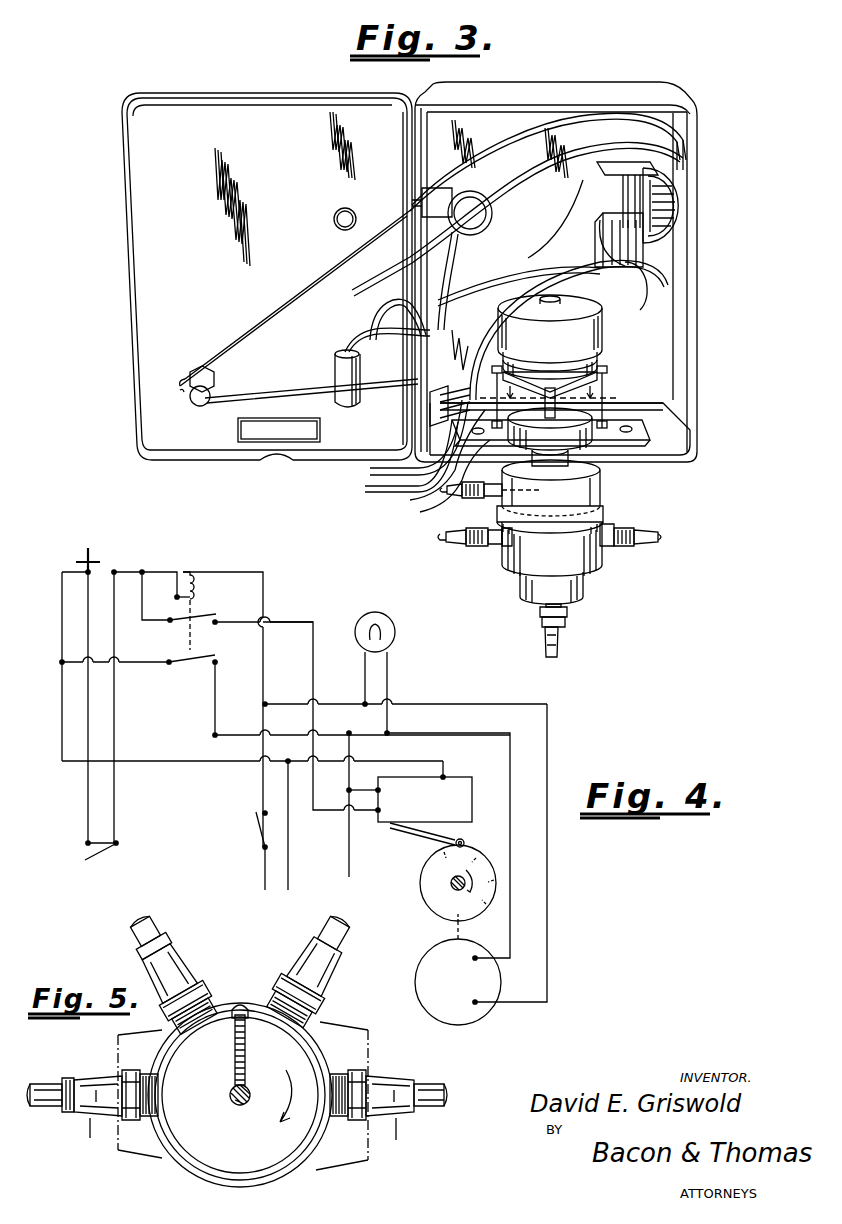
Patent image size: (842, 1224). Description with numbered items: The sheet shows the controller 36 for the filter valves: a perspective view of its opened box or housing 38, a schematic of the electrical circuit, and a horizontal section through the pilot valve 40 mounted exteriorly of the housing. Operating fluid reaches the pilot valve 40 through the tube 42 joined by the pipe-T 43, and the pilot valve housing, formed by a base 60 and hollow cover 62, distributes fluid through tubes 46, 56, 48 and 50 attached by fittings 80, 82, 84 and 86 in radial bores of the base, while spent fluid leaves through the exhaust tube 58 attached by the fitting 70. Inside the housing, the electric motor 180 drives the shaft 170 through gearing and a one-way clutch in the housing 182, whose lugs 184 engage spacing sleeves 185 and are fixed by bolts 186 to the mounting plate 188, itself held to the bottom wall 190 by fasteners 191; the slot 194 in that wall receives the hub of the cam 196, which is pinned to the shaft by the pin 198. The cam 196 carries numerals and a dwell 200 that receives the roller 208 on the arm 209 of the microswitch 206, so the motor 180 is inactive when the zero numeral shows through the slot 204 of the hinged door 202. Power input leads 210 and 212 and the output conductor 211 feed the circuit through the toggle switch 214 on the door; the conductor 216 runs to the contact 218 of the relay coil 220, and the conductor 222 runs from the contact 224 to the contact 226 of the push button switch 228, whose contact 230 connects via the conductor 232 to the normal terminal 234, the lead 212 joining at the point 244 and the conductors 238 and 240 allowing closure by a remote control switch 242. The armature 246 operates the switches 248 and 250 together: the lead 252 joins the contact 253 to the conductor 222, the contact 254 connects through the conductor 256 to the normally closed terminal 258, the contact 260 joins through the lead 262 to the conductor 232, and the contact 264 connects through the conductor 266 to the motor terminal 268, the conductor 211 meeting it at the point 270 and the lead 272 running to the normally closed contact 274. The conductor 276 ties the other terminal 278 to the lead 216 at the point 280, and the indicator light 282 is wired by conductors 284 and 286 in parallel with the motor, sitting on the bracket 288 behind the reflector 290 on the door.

In FIG. 3, the controller 36 is at (588, 72).
In FIG. 3, the box or housing 38 is at (688, 283).
In FIG. 3, the pilot valve 40 is at (566, 553).
In FIG. 5, the pilot valve 40 is at (230, 1040).
In FIG. 3, the tube 42 is at (462, 500).
In FIG. 5, the tube 42 is at (72, 1078).
In FIG. 5, the pipe-T 43 is at (132, 1070).
In FIG. 3, the tube 46 is at (462, 546).
In FIG. 5, the tube 46 is at (50, 1082).
In FIG. 3, the tube 48 is at (606, 518).
In FIG. 3, the tube 50 is at (652, 544).
In FIG. 5, the tube 50 is at (432, 1082).
In FIG. 3, the tube 56 is at (500, 506).
In FIG. 5, the tube 56 is at (186, 960).
In FIG. 3, the exhaust tube 58 is at (558, 650).
In FIG. 5, the exhaust tube 58 is at (301, 953).
In FIG. 3, the base 60 is at (512, 570).
In FIG. 5, the base 60 is at (197, 1170).
In FIG. 3, the cover 62 is at (604, 494).
In FIG. 5, the cover 62 is at (270, 1180).
In FIG. 3, the fitting 70 is at (567, 620).
In FIG. 3, the fitting 80 is at (500, 546).
In FIG. 5, the fitting 80 is at (76, 1112).
In FIG. 5, the fitting 82 is at (190, 990).
In FIG. 5, the fitting 84 is at (284, 990).
In FIG. 3, the fitting 86 is at (620, 548).
In FIG. 5, the fitting 86 is at (354, 1070).
In FIG. 3, the shaft 170 is at (550, 329).
In FIG. 4, the shaft 170 is at (454, 928).
In FIG. 5, the shaft 170 is at (250, 1090).
In FIG. 3, the electric motor 180 is at (583, 337).
In FIG. 4, the electric motor 180 is at (446, 1020).
In FIG. 3, the housing 182 is at (550, 350).
In FIG. 3, the lugs 184 is at (606, 370).
In FIG. 3, the spacing sleeves 185 is at (606, 392).
In FIG. 3, the bolts 186 is at (598, 356).
In FIG. 3, the mounting plate 188 is at (600, 442).
In FIG. 5, the mounting plate 188 is at (352, 1032).
In FIG. 3, the bottom wall 190 is at (670, 454).
In FIG. 3, the fasteners 191 is at (667, 412).
In FIG. 3, the slot 194 is at (551, 488).
In FIG. 3, the cam 196 is at (550, 419).
In FIG. 4, the cam 196 is at (428, 874).
In FIG. 5, the cam 196 is at (208, 1102).
In FIG. 5, the pin 198 is at (246, 1074).
In FIG. 4, the notch or dwell 200 is at (472, 856).
In FIG. 5, the notch or dwell 200 is at (236, 1006).
In FIG. 3, the door 202 is at (188, 233).
In FIG. 3, the slot 204 is at (310, 437).
In FIG. 3, the microswitch 206 is at (430, 408).
In FIG. 4, the microswitch 206 is at (472, 800).
In FIG. 4, the roller 208 is at (440, 832).
In FIG. 4, the arm 209 is at (466, 840).
In FIG. 3, the power input lead 210 is at (370, 471).
In FIG. 4, the power input lead 210 is at (262, 870).
In FIG. 3, the conductor 211 is at (410, 500).
In FIG. 3, the power input lead 212 is at (365, 489).
In FIG. 4, the power input lead 212 is at (290, 884).
In FIG. 3, the main or toggle switch 214 is at (360, 387).
In FIG. 4, the main or toggle switch 214 is at (256, 830).
In FIG. 3, the conductor 216 is at (352, 340).
In FIG. 4, the conductor 216 is at (262, 784).
In FIG. 3, the contact 218 is at (686, 135).
In FIG. 4, the contact 218 is at (204, 572).
In FIG. 3, the relay coil 220 is at (672, 196).
In FIG. 4, the relay coil 220 is at (196, 586).
In FIG. 3, the conductor 222 is at (296, 300).
In FIG. 4, the conductor 222 is at (157, 572).
In FIG. 3, the contact 224 is at (686, 157).
In FIG. 4, the contact 224 is at (172, 606).
In FIG. 3, the contact 226 is at (186, 394).
In FIG. 4, the contact 226 is at (132, 572).
In FIG. 3, the push button switch 228 is at (200, 408).
In FIG. 4, the push button switch 228 is at (92, 546).
In FIG. 3, the contact 230 is at (206, 400).
In FIG. 4, the contact 230 is at (88, 570).
In FIG. 3, the conductor 232 is at (284, 378).
In FIG. 4, the conductor 232 is at (62, 636).
In FIG. 4, the normal terminal 234 is at (444, 776).
In FIG. 3, the conductor 238 is at (446, 476).
In FIG. 4, the conductor 238 is at (114, 794).
In FIG. 3, the conductor 240 is at (521, 491).
In FIG. 4, the conductor 240 is at (88, 800).
In FIG. 4, the remote control switch 242 is at (100, 852).
In FIG. 4, the point 244 is at (302, 760).
In FIG. 4, the armature 246 is at (190, 572).
In FIG. 4, the switch 248 is at (210, 612).
In FIG. 4, the switch 250 is at (180, 664).
In FIG. 3, the lead 252 is at (620, 182).
In FIG. 4, the lead 252 is at (140, 622).
In FIG. 3, the contact 253 is at (596, 232).
In FIG. 4, the contact 253 is at (168, 622).
In FIG. 3, the contact 254 is at (600, 268).
In FIG. 4, the contact 254 is at (216, 658).
In FIG. 3, the conductor 256 is at (540, 270).
In FIG. 4, the conductor 256 is at (310, 622).
In FIG. 4, the normally closed terminal 258 is at (388, 830).
In FIG. 3, the contact 260 is at (626, 290).
In FIG. 4, the contact 260 is at (168, 666).
In FIG. 4, the lead 262 is at (130, 664).
In FIG. 3, the contact 264 is at (660, 268).
In FIG. 4, the contact 264 is at (216, 664).
In FIG. 4, the conductor 266 is at (422, 733).
In FIG. 4, the terminal 268 is at (472, 958).
In FIG. 4, the point 270 is at (350, 730).
In FIG. 4, the lead 272 is at (348, 788).
In FIG. 4, the normally closed contact 274 is at (416, 792).
In FIG. 4, the conductor 276 is at (548, 728).
In FIG. 4, the terminal 278 is at (472, 1002).
In FIG. 4, the point 280 is at (262, 704).
In FIG. 3, the indicator light 282 is at (490, 196).
In FIG. 4, the indicator light 282 is at (372, 612).
In FIG. 4, the conductor 284 is at (362, 672).
In FIG. 4, the conductor 286 is at (390, 668).
In FIG. 3, the bracket 288 is at (410, 200).
In FIG. 3, the reflector 290 is at (334, 221).